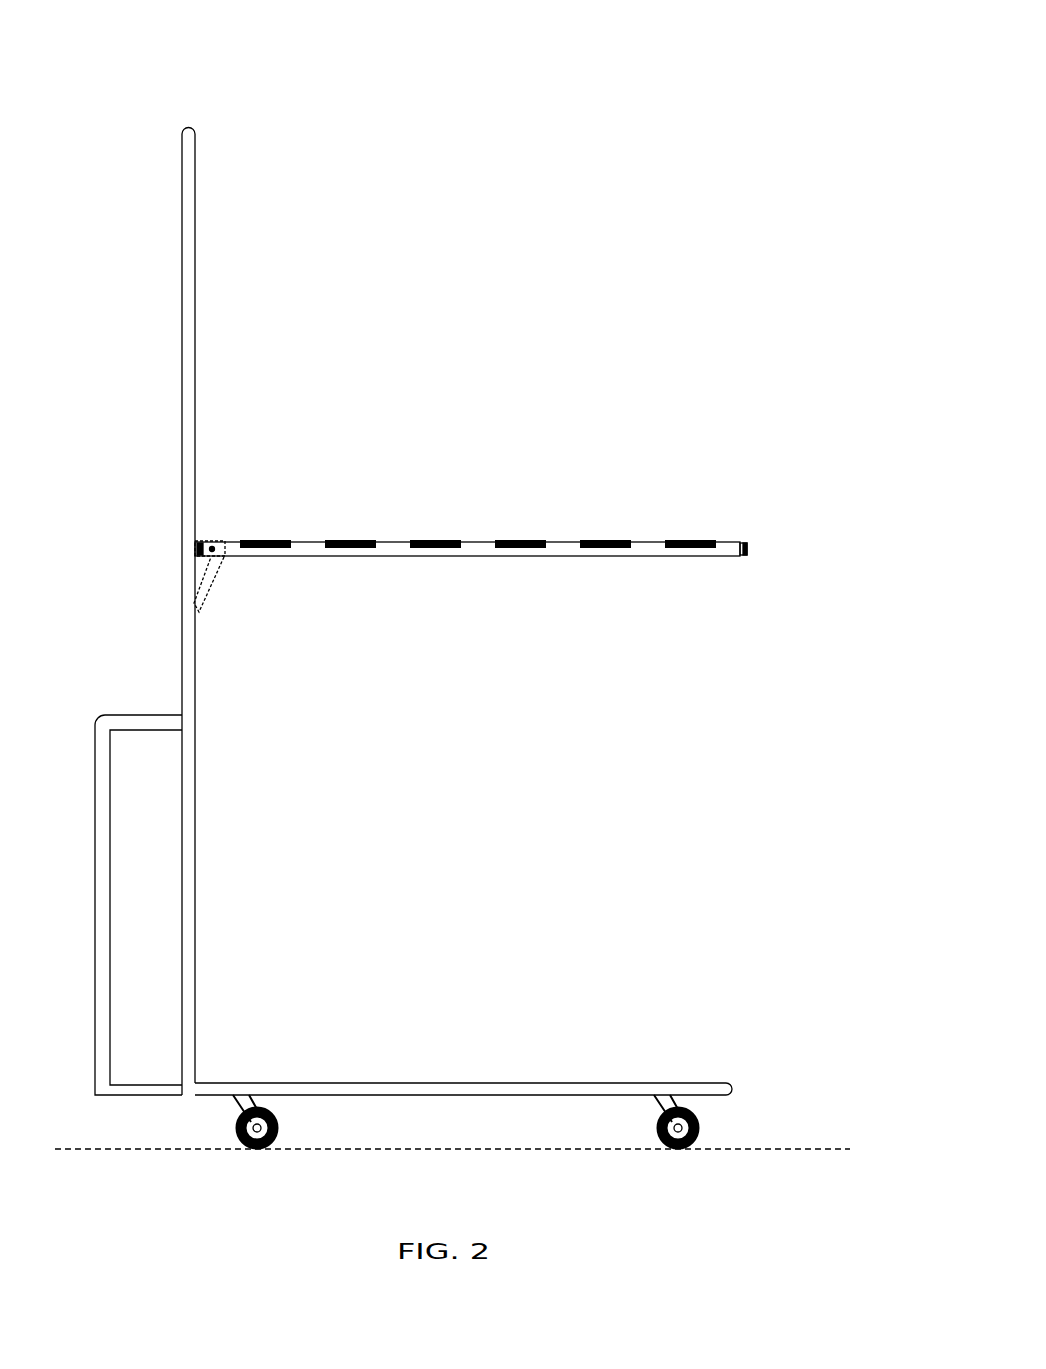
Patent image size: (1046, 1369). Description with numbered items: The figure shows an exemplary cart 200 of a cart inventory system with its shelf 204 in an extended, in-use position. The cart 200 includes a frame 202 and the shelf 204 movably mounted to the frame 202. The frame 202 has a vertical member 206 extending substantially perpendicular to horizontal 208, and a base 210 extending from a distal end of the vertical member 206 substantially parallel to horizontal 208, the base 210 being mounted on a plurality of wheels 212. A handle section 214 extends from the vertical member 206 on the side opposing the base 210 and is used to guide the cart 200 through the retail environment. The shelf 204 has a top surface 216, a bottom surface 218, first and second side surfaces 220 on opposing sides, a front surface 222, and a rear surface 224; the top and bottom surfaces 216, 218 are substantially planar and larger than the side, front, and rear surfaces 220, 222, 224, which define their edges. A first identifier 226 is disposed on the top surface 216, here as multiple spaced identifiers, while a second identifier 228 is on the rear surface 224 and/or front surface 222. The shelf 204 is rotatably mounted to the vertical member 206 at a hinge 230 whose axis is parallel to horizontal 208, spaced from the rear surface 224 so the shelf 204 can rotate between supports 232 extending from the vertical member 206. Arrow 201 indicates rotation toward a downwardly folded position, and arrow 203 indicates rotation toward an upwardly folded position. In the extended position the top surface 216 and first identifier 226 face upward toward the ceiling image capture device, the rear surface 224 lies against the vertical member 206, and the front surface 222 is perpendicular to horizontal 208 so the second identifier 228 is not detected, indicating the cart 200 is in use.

The cart 200 is at (483, 36).
The arrow 201 is at (678, 628).
The frame 202 is at (172, 612).
The arrow 203 is at (702, 515).
The shelf 204 is at (479, 573).
The vertical member 206 is at (196, 256).
The horizontal 208 is at (808, 1147).
The base 210 is at (470, 1082).
The wheels 212 is at (271, 1113).
The handle section 214 is at (133, 710).
The top surface 216 is at (477, 541).
The bottom surface 218 is at (480, 557).
The first and second side surfaces 220 is at (390, 548).
The front surface 222 is at (762, 535).
The rear surface 224 is at (207, 540).
The first identifier 226 is at (350, 540).
The second identifier 228 is at (748, 548).
The hinge 230 is at (214, 553).
The supports 232 is at (204, 598).